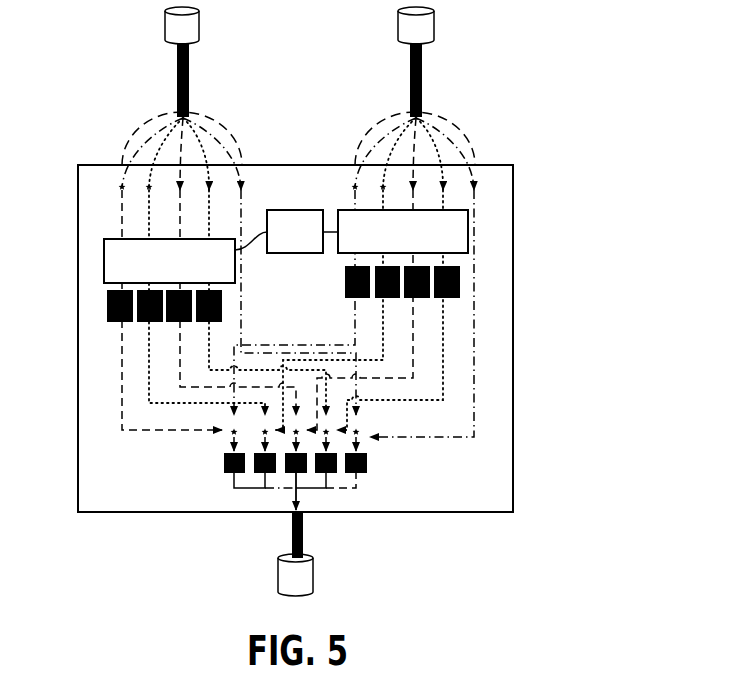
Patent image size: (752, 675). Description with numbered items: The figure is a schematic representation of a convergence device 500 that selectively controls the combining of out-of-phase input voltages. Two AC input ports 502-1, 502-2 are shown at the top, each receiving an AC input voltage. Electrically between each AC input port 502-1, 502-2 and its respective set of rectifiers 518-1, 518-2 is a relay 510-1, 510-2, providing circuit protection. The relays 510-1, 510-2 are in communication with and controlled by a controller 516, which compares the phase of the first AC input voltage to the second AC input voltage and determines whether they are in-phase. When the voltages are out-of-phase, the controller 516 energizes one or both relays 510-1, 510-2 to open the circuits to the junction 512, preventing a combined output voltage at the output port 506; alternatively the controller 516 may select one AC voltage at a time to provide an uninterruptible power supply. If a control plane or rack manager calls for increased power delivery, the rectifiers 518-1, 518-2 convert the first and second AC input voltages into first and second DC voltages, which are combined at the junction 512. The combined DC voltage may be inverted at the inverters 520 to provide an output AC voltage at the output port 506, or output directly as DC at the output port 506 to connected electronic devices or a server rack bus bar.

The convergence device 500 is at (597, 150).
The first AC input port 502-1 is at (119, 161).
The second AC input port 502-2 is at (479, 161).
The output port 506 is at (302, 515).
The first relay 510-1 is at (193, 273).
The second relay 510-2 is at (427, 243).
The junction 512 is at (291, 468).
The controller 516 is at (313, 243).
The first set of rectifiers 518-1 is at (107, 308).
The second set of rectifiers 518-2 is at (460, 282).
The inverters 520 is at (367, 462).